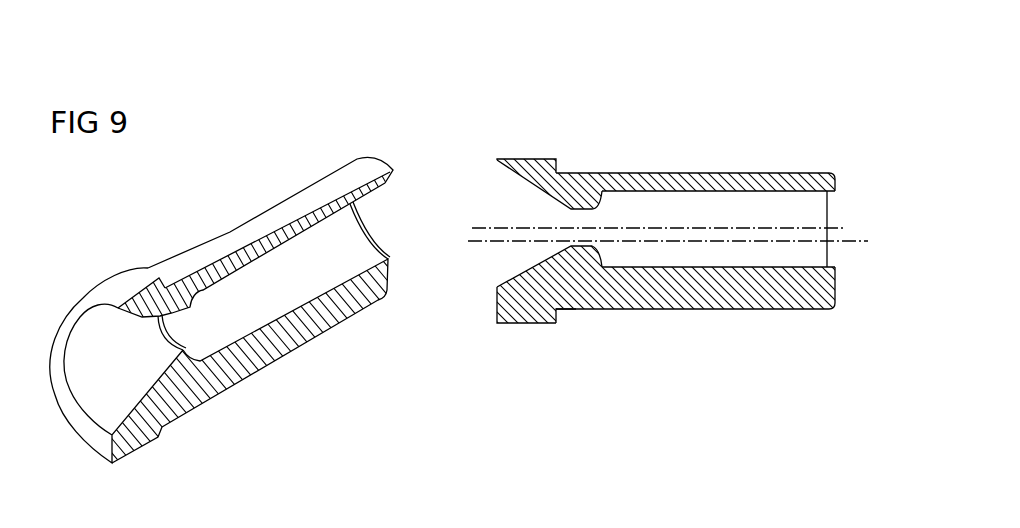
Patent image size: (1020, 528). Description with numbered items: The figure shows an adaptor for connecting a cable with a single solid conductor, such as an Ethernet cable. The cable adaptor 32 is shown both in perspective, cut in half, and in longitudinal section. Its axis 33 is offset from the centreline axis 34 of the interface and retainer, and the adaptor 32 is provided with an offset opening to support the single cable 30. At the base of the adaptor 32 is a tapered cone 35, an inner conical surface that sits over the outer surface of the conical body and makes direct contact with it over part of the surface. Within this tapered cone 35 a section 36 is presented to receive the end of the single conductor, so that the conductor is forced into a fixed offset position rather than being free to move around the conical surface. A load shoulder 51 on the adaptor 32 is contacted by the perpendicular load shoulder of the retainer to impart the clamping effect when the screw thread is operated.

The single cable 30 is at (715, 202).
The cable adaptor 32 is at (733, 300).
The axis of the adaptor 33 is at (483, 225).
The centreline axis 34 is at (853, 243).
The tapered cone 35 is at (138, 430).
The section 36 is at (141, 295).
The load shoulder 51 is at (560, 318).